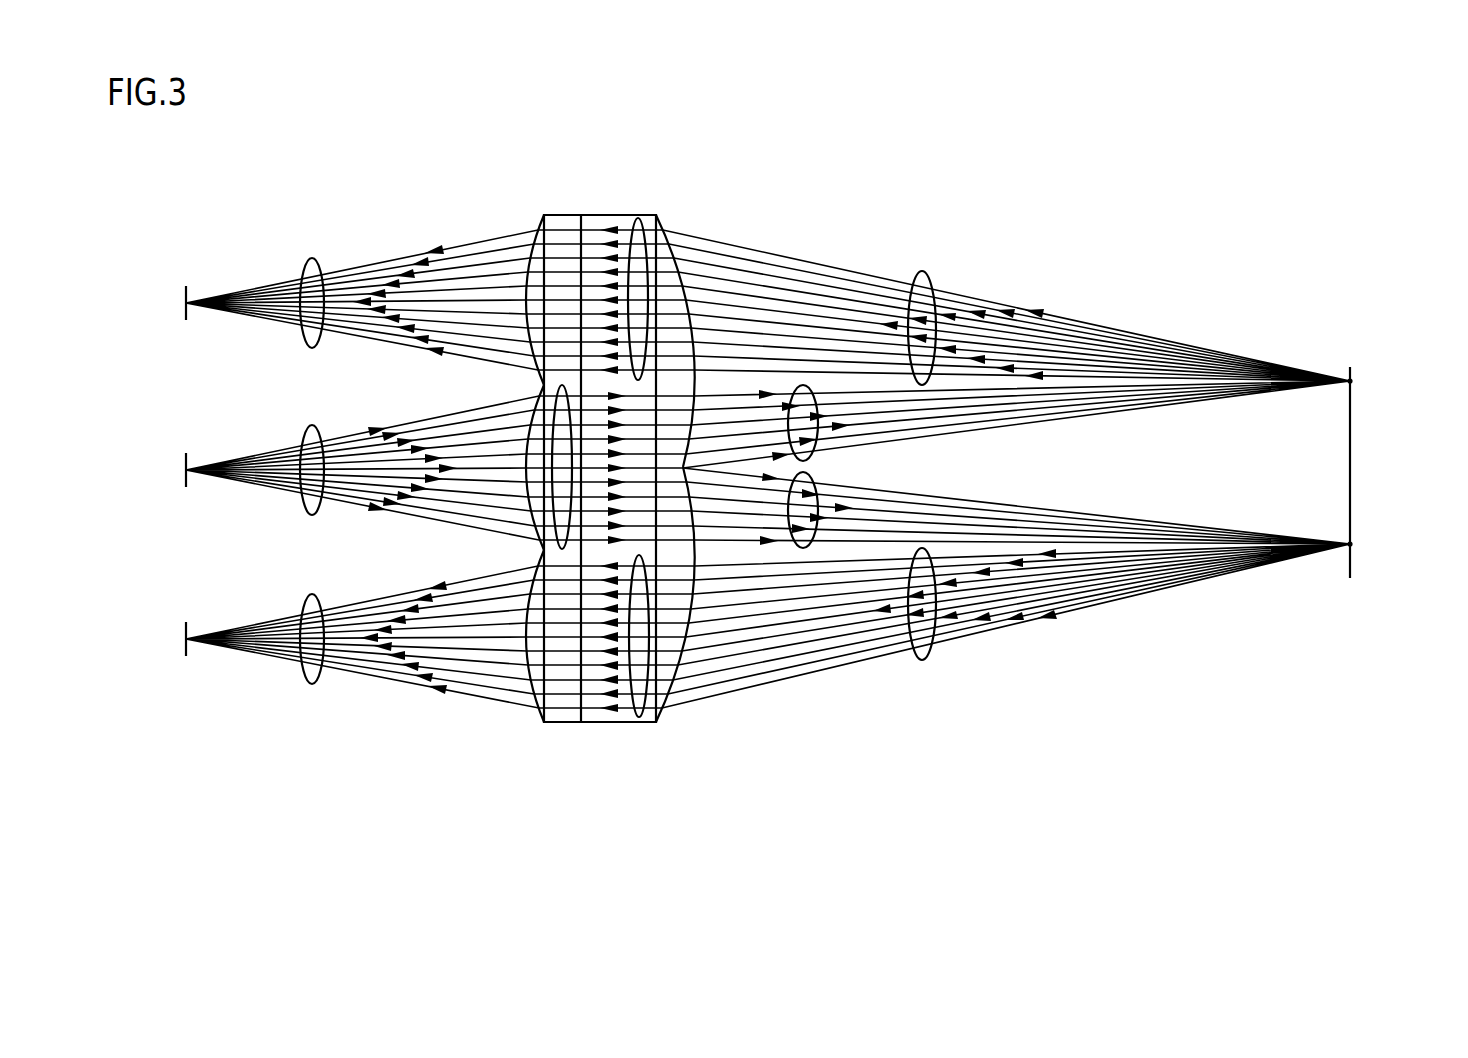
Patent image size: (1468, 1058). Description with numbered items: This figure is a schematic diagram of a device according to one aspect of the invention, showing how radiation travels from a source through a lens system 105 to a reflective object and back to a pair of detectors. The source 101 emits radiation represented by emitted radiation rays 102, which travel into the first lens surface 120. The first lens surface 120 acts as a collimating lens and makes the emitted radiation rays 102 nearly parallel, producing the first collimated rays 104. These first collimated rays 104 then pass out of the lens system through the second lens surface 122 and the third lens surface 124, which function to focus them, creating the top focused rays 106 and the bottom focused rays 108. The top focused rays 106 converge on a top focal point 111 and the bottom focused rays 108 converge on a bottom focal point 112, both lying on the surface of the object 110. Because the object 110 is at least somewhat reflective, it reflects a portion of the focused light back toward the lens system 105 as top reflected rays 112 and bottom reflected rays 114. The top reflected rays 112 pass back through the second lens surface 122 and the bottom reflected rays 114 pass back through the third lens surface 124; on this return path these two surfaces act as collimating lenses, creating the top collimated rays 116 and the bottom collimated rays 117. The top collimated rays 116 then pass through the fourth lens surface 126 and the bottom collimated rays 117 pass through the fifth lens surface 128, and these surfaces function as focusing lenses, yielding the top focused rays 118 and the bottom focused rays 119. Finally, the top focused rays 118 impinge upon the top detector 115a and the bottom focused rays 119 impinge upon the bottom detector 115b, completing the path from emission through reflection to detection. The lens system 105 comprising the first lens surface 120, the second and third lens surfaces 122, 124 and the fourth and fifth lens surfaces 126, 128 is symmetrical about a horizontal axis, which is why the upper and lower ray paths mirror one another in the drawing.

The source 101 is at (185, 463).
The emitted radiation rays 102 is at (307, 433).
The first collimated rays 104 is at (557, 545).
The lens system 105 is at (613, 752).
The top focused rays 106 is at (818, 450).
The bottom focused rays 108 is at (820, 486).
The object 110 is at (1358, 465).
The top focal point 111 is at (1352, 381).
The bottom focal point / top reflected rays 112 is at (928, 280).
The bottom reflected rays 114 is at (928, 653).
The top detector 115a is at (185, 298).
The bottom detector 115b is at (185, 632).
The top collimated rays 116 is at (640, 225).
The bottom collimated rays 117 is at (642, 712).
The top focused rays 118 is at (317, 257).
The bottom focused rays 119 is at (318, 684).
The first lens surface 120 is at (533, 422).
The second lens surface 122 is at (678, 267).
The third lens surface 124 is at (682, 657).
The fourth lens surface 126 is at (532, 240).
The fifth lens surface 128 is at (535, 685).